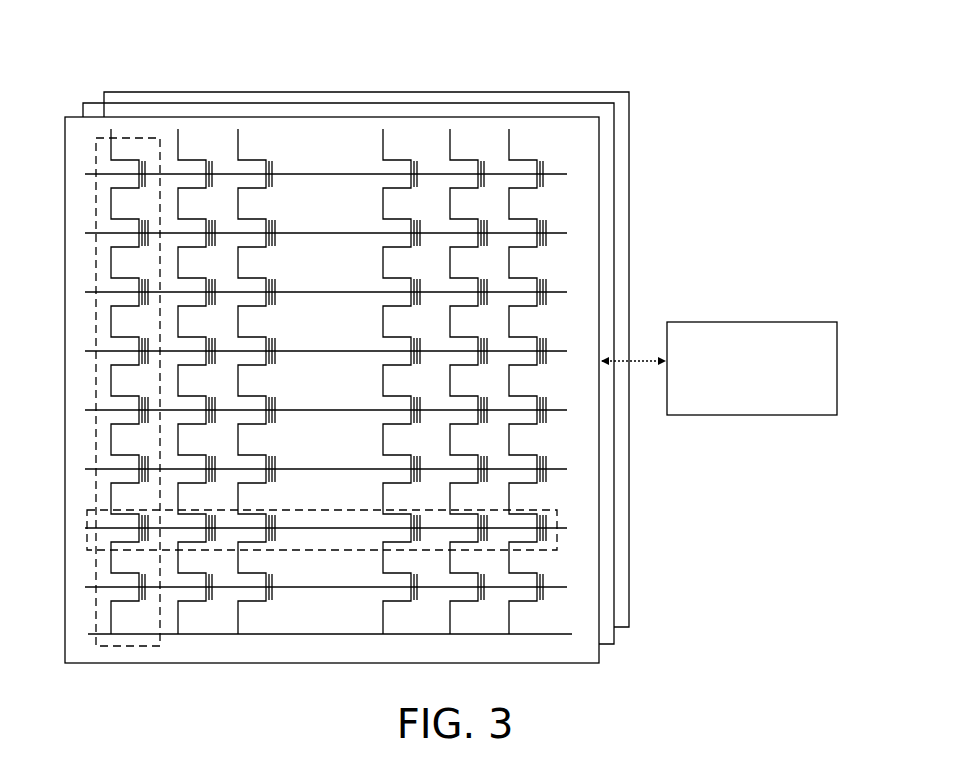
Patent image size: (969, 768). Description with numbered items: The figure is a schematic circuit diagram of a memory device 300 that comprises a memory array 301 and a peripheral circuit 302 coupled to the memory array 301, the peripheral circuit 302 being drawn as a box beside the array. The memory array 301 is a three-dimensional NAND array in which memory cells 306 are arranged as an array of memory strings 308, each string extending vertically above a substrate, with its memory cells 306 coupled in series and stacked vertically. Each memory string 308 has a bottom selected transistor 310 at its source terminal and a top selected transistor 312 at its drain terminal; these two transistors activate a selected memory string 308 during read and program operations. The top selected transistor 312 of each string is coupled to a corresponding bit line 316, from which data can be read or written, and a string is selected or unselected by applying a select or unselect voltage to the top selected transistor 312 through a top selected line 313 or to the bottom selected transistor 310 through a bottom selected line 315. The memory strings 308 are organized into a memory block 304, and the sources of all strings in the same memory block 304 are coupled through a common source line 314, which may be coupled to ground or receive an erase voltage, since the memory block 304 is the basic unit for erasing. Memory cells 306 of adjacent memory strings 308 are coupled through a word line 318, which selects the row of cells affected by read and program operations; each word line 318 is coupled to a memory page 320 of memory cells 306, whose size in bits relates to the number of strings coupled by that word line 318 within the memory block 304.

The memory device 300 is at (445, 51).
The memory array 301 is at (597, 81).
The peripheral circuit 302 is at (820, 322).
The memory block 304 is at (509, 117).
The memory cell 306 is at (139, 269).
The memory string 308 is at (96, 213).
The bottom selected transistor 310 is at (139, 611).
The top selected transistor 312 is at (138, 152).
The top selected line 313 is at (540, 174).
The source line 314 is at (195, 634).
The bottom selected line 315 is at (543, 587).
The bit line 316 is at (111, 136).
The word line 318 is at (280, 469).
The memory page 320 is at (280, 510).